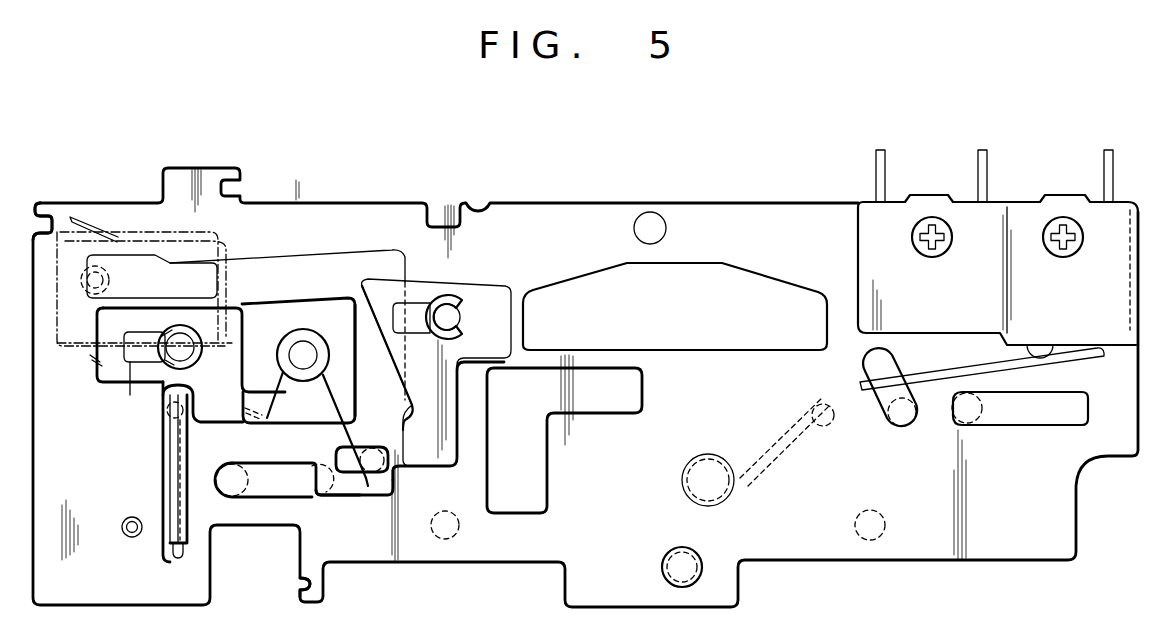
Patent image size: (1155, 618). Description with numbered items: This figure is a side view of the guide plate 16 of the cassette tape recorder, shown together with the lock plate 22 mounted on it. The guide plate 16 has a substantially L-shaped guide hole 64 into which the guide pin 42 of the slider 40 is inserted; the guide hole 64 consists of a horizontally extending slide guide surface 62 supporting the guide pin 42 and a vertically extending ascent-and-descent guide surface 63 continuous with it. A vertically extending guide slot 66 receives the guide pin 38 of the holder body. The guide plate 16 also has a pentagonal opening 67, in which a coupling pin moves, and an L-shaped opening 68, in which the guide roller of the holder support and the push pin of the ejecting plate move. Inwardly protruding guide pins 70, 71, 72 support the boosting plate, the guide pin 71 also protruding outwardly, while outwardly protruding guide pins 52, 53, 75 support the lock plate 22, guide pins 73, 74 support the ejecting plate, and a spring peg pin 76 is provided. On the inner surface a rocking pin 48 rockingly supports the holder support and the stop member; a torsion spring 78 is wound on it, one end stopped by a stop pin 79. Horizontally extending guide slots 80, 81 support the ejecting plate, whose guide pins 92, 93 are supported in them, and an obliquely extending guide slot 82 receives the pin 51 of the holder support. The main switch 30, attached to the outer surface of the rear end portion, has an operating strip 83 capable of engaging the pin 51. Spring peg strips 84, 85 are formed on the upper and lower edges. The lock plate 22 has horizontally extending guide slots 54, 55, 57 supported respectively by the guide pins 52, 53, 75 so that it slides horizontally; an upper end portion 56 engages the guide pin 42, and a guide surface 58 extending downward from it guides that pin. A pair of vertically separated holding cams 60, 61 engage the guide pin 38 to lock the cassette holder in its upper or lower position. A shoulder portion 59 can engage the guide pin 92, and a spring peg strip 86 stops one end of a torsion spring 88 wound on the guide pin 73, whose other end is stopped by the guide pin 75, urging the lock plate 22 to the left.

The guide plate 16 is at (803, 208).
The lock plate 22 is at (494, 290).
The main switch 30 is at (860, 248).
The guide pin 38 is at (166, 407).
The slider 40 is at (70, 245).
The guide pin 42 is at (107, 282).
The rocking pin 48 is at (687, 472).
The pin 51 is at (906, 422).
The guide pin 52 is at (466, 318).
The guide pin 53 is at (195, 355).
The guide slot 54 is at (400, 306).
The guide slot 55 is at (130, 386).
The upper end portion 56 is at (362, 284).
The guide slot 57 is at (340, 452).
The guide surface 58 is at (400, 362).
The shoulder portion 59 is at (334, 494).
The holding cam 60 is at (188, 421).
The holding cam 61 is at (182, 556).
The slide guide surface 62 is at (252, 303).
The ascent-and-descent guide surface 63 is at (357, 358).
The guide hole 64 is at (286, 262).
The guide slot 66 is at (166, 553).
The pentagonal opening 67 is at (746, 270).
The L-shaped opening 68 is at (593, 408).
The guide pin 70 is at (455, 528).
The guide pin 71 is at (696, 560).
The guide pin 72 is at (884, 528).
The guide pin 73 is at (305, 340).
The guide pin 74 is at (130, 537).
The guide pin 75 is at (382, 457).
The spring peg pin 76 is at (667, 229).
The torsion spring 78 is at (768, 456).
The stop pin 79 is at (832, 418).
The guide slot 80 is at (300, 496).
The guide slot 81 is at (1062, 422).
The guide slot 82 is at (860, 370).
The operating strip 83 is at (931, 376).
The spring peg strip 84 is at (470, 208).
The spring peg strip 85 is at (298, 590).
The spring peg strip 86 is at (277, 410).
The torsion spring 88 is at (277, 365).
The guide pin 92 is at (248, 481).
The guide pin 93 is at (976, 422).